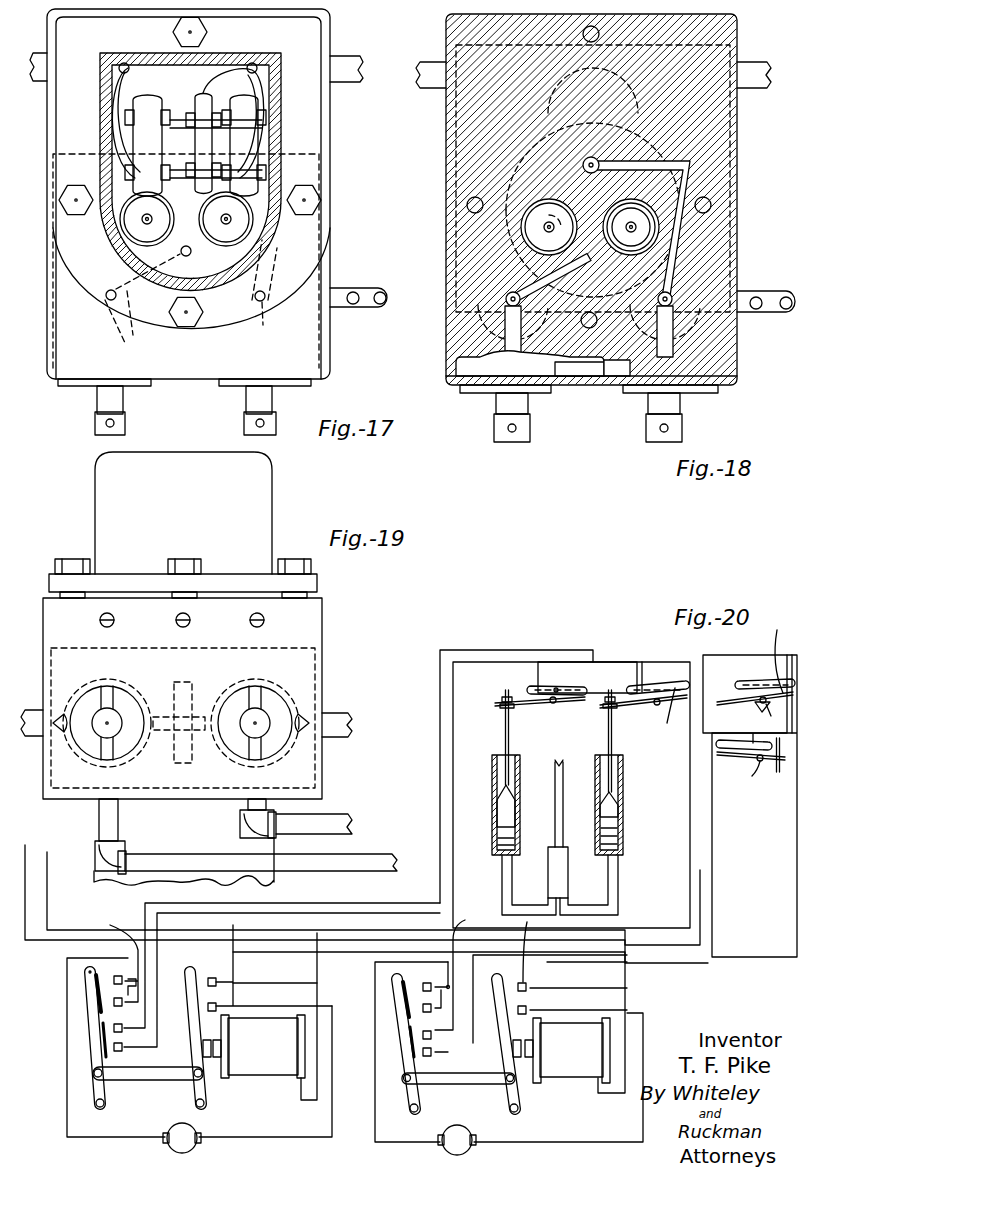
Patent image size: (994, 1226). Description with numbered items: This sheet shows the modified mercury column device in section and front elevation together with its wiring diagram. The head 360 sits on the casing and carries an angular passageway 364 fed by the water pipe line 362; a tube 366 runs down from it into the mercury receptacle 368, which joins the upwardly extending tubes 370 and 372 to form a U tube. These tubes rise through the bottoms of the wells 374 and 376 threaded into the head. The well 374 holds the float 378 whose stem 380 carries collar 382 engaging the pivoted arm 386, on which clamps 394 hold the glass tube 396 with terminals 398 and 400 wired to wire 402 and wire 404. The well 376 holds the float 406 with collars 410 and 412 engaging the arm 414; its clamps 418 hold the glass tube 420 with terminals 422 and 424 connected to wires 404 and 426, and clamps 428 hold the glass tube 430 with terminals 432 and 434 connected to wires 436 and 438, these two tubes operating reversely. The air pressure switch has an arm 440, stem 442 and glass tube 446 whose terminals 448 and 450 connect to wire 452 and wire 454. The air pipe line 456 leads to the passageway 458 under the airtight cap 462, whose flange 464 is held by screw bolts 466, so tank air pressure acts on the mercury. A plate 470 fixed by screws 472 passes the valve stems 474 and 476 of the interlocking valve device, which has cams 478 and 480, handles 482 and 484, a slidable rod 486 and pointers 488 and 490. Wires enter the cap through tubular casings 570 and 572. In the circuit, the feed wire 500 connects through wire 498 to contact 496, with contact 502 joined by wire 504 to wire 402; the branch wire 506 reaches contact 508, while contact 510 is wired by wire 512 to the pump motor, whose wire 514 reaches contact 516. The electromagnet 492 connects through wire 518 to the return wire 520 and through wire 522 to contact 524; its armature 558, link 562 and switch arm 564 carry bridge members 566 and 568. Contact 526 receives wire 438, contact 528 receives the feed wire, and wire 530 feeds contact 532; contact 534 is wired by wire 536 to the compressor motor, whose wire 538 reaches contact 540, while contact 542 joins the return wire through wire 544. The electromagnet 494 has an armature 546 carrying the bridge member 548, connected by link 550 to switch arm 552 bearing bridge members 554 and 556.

In FIG. 17, the head 360 is at (330, 170).
In FIG. 18, the head 360 is at (737, 129).
In FIG. 17, the water pipe line 362 is at (342, 288).
In FIG. 18, the water pipe line 362 is at (750, 291).
In FIG. 19, the water pipe line 362 is at (336, 814).
In FIG. 17, the angular passageway 364 is at (272, 302).
In FIG. 18, the angular passageway 364 is at (692, 165).
In FIG. 18, the tube 366 is at (583, 163).
In FIG. 20, the receptacle 368 is at (548, 867).
In FIG. 20, the tube 370 is at (502, 888).
In FIG. 20, the tube 372 is at (618, 888).
In FIG. 17, the well 374 is at (122, 222).
In FIG. 18, the well 374 is at (521, 227).
In FIG. 20, the well 374 is at (492, 822).
In FIG. 17, the well 376 is at (252, 226).
In FIG. 18, the well 376 is at (660, 224).
In FIG. 20, the well 376 is at (623, 846).
In FIG. 17, the float 378 is at (128, 236).
In FIG. 18, the float 378 is at (522, 236).
In FIG. 20, the float 378 is at (497, 811).
In FIG. 20, the stem 380 is at (505, 738).
In FIG. 17, the collar 382 is at (151, 216).
In FIG. 20, the collar 382 is at (500, 698).
In FIG. 20, the arm 386 is at (520, 697).
In FIG. 17, the clamps 394 is at (160, 110).
In FIG. 20, the glass tube 396 is at (558, 688).
In FIG. 20, the terminal 398 is at (550, 703).
In FIG. 20, the terminal 400 is at (548, 687).
In FIG. 20, the wire 402 is at (462, 650).
In FIG. 20, the wire 404 is at (607, 662).
In FIG. 17, the float 406 is at (250, 233).
In FIG. 18, the float 406 is at (648, 236).
In FIG. 20, the float 406 is at (618, 809).
In FIG. 20, the collar 410 is at (606, 697).
In FIG. 20, the collar 412 is at (608, 712).
In FIG. 20, the arm 414 is at (725, 700).
In FIG. 17, the clamps 418 is at (262, 66).
In FIG. 17, the glass tube 420 is at (203, 93).
In FIG. 20, the glass tube 420 is at (668, 724).
In FIG. 20, the terminal 422 is at (625, 706).
In FIG. 20, the terminal 424 is at (645, 687).
In FIG. 20, the wire 426 is at (660, 662).
In FIG. 17, the clamps 428 is at (262, 112).
In FIG. 17, the glass tube 430 is at (250, 127).
In FIG. 20, the glass tube 430 is at (760, 681).
In FIG. 20, the terminal 432 is at (778, 633).
In FIG. 20, the terminal 434 is at (771, 713).
In FIG. 20, the wire 436 is at (725, 655).
In FIG. 20, the wire 438 is at (790, 656).
In FIG. 20, the arm 440 is at (720, 756).
In FIG. 20, the stem 442 is at (778, 772).
In FIG. 20, the glass tube 446 is at (718, 745).
In FIG. 20, the terminal 448 is at (756, 777).
In FIG. 20, the terminal 450 is at (756, 706).
In FIG. 20, the wire 452 is at (760, 702).
In FIG. 20, the wire 454 is at (712, 838).
In FIG. 17, the air pipe line 456 is at (366, 305).
In FIG. 18, the air pipe line 456 is at (772, 312).
In FIG. 19, the air pipe line 456 is at (386, 857).
In FIG. 17, the passageway 458 is at (133, 316).
In FIG. 17, the cap 462 is at (118, 53).
In FIG. 19, the cap 462 is at (272, 490).
In FIG. 17, the flange 464 is at (319, 154).
In FIG. 19, the flange 464 is at (317, 587).
In FIG. 17, the screw bolts 466 is at (172, 30).
In FIG. 18, the screw bolts 466 is at (467, 204).
In FIG. 19, the screw bolts 466 is at (180, 559).
In FIG. 19, the plate 470 is at (322, 637).
In FIG. 19, the screws 472 is at (176, 619).
In FIG. 17, the valve stem 474 is at (125, 426).
In FIG. 18, the valve stem 474 is at (496, 406).
In FIG. 19, the valve stem 474 is at (116, 728).
In FIG. 17, the valve stem 476 is at (246, 413).
In FIG. 18, the valve stem 476 is at (680, 409).
In FIG. 19, the valve stem 476 is at (248, 728).
In FIG. 18, the cam 478 is at (536, 378).
In FIG. 19, the cam 478 is at (140, 685).
In FIG. 18, the cam 480 is at (618, 378).
In FIG. 19, the cam 480 is at (282, 688).
In FIG. 19, the handle 482 is at (90, 696).
In FIG. 19, the handle 484 is at (248, 696).
In FIG. 18, the slidable rod 486 is at (578, 378).
In FIG. 19, the pointer 488 is at (60, 730).
In FIG. 19, the pointer 490 is at (312, 720).
In FIG. 20, the electromagnet 492 is at (265, 1065).
In FIG. 20, the electromagnet 494 is at (578, 1078).
In FIG. 20, the contact 496 is at (123, 1030).
In FIG. 20, the wire 498 is at (112, 927).
In FIG. 20, the feed wire 500 is at (27, 846).
In FIG. 20, the contact 502 is at (123, 1049).
In FIG. 20, the wire 504 is at (330, 903).
In FIG. 20, the branch wire 506 is at (137, 982).
In FIG. 20, the contact 508 is at (112, 977).
In FIG. 20, the contact 510 is at (123, 1003).
In FIG. 20, the wire 512 is at (67, 1021).
In FIG. 20, the wire 514 is at (275, 1137).
In FIG. 20, the contact 516 is at (217, 1006).
In FIG. 20, the wire 518 is at (318, 964).
In FIG. 20, the return wire 520 is at (49, 866).
In FIG. 20, the wire 522 is at (272, 983).
In FIG. 20, the contact 524 is at (217, 980).
In FIG. 20, the contact 526 is at (432, 1054).
In FIG. 20, the contact 528 is at (421, 1034).
In FIG. 20, the wire 530 is at (466, 922).
In FIG. 20, the contact 532 is at (425, 982).
In FIG. 20, the contact 534 is at (421, 1007).
In FIG. 20, the wire 536 is at (400, 1142).
In FIG. 20, the wire 538 is at (509, 1052).
In FIG. 20, the contact 540 is at (528, 1010).
In FIG. 20, the contact 542 is at (528, 925).
In FIG. 20, the wire 544 is at (582, 989).
In FIG. 20, the armature 546 is at (515, 1099).
In FIG. 20, the bridge member 548 is at (519, 982).
In FIG. 20, the link 550 is at (455, 1084).
In FIG. 20, the switch arm 552 is at (400, 1061).
In FIG. 20, the bridge member 554 is at (403, 986).
In FIG. 20, the bridge member 556 is at (410, 1041).
In FIG. 20, the armature 558 is at (190, 1098).
In FIG. 20, the link 562 is at (142, 1081).
In FIG. 20, the switch arm 564 is at (88, 1063).
In FIG. 20, the bridge member 566 is at (93, 984).
In FIG. 20, the bridge member 568 is at (102, 1040).
In FIG. 17, the tubular casing 570 is at (40, 53).
In FIG. 18, the tubular casing 570 is at (428, 88).
In FIG. 19, the tubular casing 570 is at (38, 710).
In FIG. 17, the tubular casing 572 is at (345, 58).
In FIG. 18, the tubular casing 572 is at (760, 64).
In FIG. 19, the tubular casing 572 is at (352, 728).